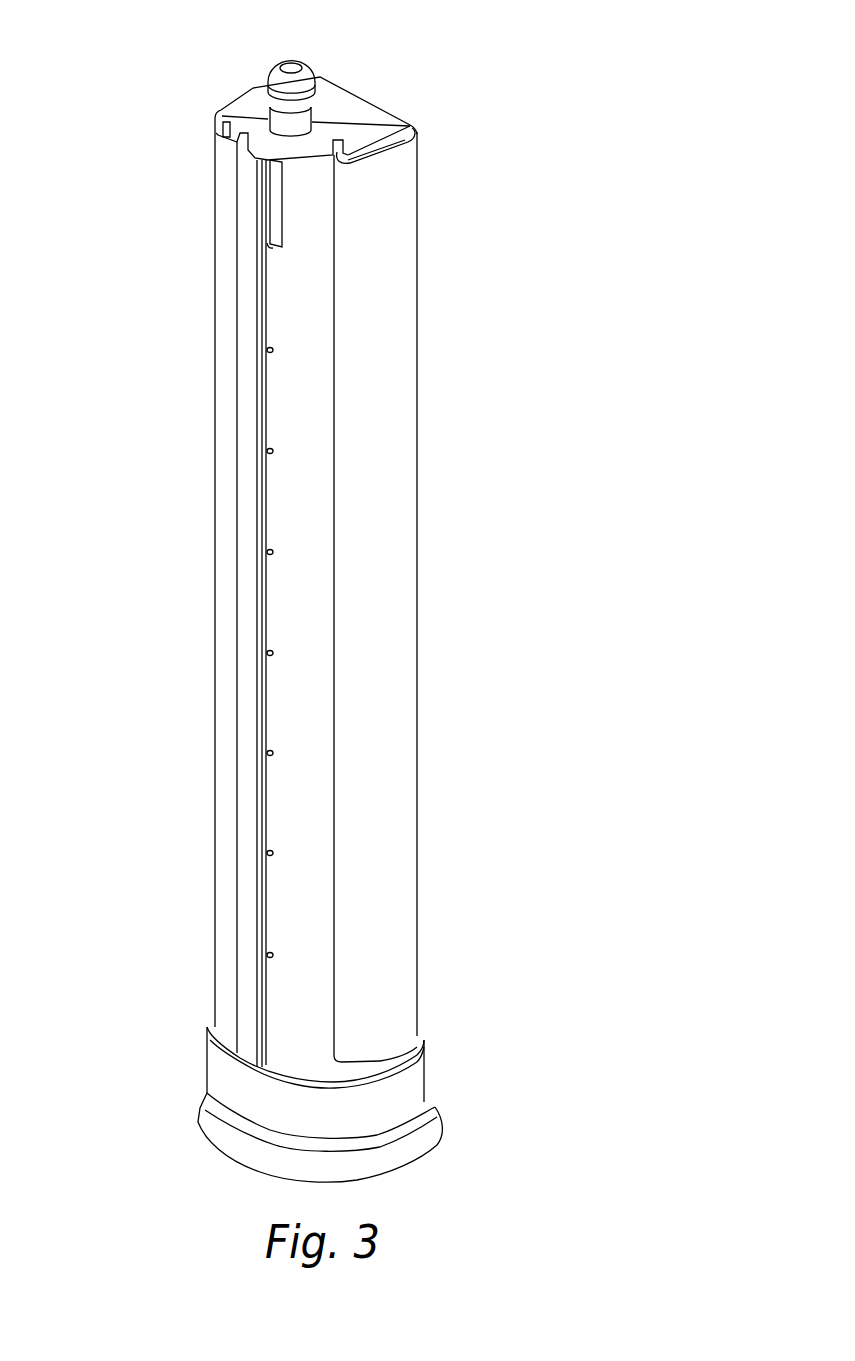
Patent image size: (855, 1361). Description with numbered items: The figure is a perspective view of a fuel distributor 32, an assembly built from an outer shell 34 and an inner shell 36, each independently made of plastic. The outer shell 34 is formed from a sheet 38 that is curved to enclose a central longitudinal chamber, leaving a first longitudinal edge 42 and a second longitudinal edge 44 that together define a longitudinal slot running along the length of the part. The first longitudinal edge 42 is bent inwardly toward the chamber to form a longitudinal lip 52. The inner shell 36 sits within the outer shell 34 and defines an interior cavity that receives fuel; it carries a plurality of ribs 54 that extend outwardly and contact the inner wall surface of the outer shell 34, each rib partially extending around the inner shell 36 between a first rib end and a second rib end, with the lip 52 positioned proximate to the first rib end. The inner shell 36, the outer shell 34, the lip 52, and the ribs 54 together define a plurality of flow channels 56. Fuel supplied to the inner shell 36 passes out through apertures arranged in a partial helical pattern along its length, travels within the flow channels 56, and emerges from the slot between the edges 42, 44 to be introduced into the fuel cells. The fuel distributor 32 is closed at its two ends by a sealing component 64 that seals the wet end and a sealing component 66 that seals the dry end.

The fuel distributor 32 is at (590, 152).
The outer shell 34 is at (418, 287).
The inner shell 36 is at (252, 105).
The sheet 38 is at (383, 428).
The first longitudinal edge 42 is at (334, 577).
The second longitudinal edge 44 is at (263, 233).
The longitudinal lip 52 is at (412, 133).
The ribs 54 is at (185, 656).
The flow channels 56 is at (296, 604).
The sealing component 64 is at (287, 86).
The sealing component 66 is at (412, 1108).